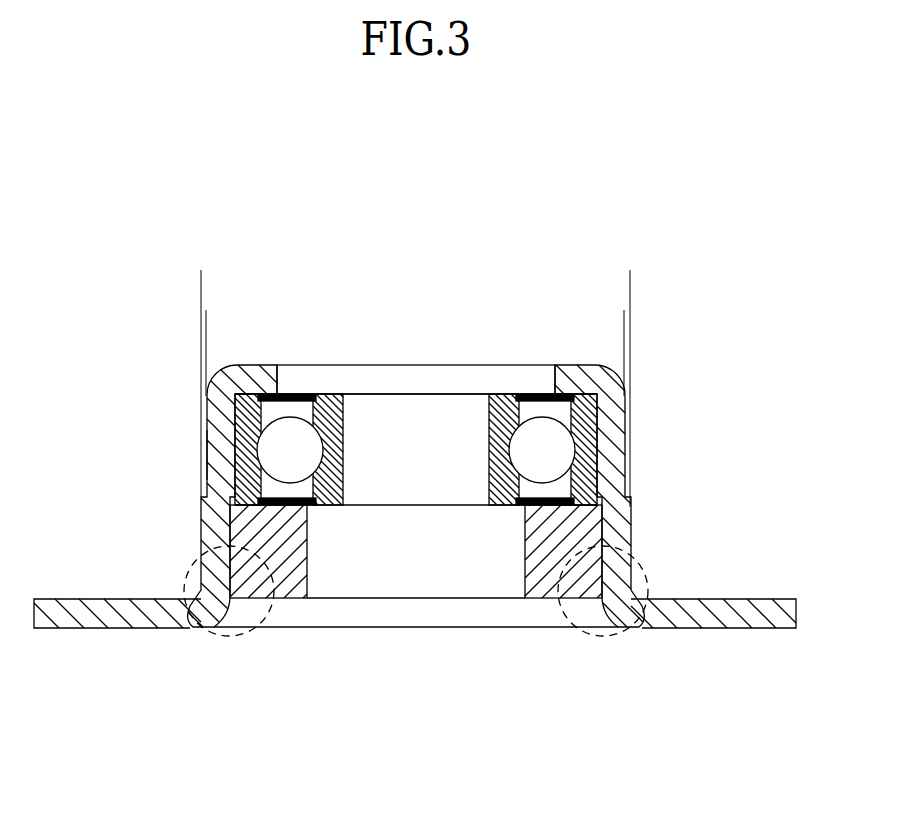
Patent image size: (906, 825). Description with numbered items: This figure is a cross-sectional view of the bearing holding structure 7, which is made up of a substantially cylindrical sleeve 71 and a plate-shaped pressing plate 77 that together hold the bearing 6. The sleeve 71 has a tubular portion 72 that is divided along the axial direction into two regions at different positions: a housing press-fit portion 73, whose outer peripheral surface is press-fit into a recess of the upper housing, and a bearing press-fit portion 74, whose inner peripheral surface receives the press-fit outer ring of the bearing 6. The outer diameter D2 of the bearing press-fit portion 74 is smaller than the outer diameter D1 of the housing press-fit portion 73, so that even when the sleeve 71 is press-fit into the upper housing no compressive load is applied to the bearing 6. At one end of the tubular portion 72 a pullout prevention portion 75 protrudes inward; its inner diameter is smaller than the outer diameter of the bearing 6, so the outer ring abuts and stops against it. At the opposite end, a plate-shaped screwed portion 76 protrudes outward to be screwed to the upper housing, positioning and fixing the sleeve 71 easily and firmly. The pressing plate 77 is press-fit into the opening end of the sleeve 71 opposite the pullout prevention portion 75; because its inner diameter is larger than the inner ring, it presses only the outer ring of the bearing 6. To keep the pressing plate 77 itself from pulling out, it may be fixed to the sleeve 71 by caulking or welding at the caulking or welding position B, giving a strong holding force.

The bearing holding structure 7 is at (427, 435).
The sleeve 71 is at (621, 376).
The tubular portion 72 is at (212, 470).
The housing press-fit portion 73 is at (638, 498).
The bearing press-fit portion 74 is at (638, 393).
The pullout prevention portion 75 is at (253, 369).
The screwed portion 76 is at (86, 629).
The pressing plate 77 is at (286, 599).
The bearing 6 is at (353, 492).
The caulking or welding position B is at (603, 636).
The outer diameter of housing press-fit portion D1 is at (201, 282).
The outer diameter of bearing press-fit portion D2 is at (206, 322).